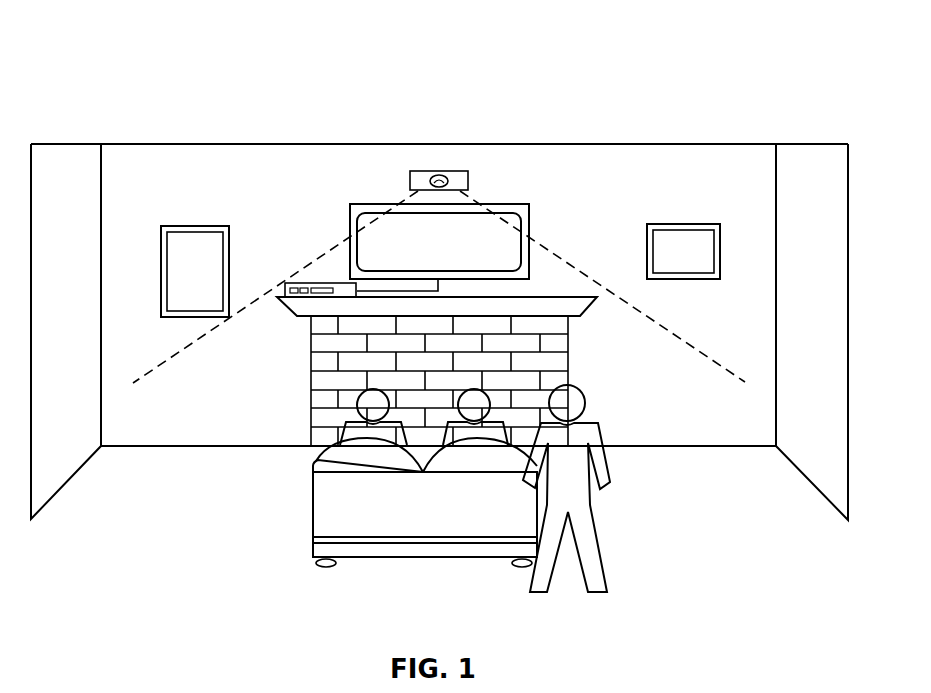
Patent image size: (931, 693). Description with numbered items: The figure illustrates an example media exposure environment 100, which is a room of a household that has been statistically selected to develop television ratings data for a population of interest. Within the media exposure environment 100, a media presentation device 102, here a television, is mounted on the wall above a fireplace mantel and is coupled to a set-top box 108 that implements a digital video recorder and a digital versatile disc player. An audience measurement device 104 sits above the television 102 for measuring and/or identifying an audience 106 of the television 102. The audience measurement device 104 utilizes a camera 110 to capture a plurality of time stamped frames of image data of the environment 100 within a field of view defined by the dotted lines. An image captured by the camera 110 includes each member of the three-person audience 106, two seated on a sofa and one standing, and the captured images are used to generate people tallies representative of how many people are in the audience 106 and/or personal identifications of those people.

The media exposure environment 100 is at (127, 133).
The media presentation device 102 is at (454, 252).
The audience measurement device 104 is at (410, 180).
The audience 106 is at (652, 517).
The set-top box 108 is at (305, 283).
The camera 110 is at (441, 176).